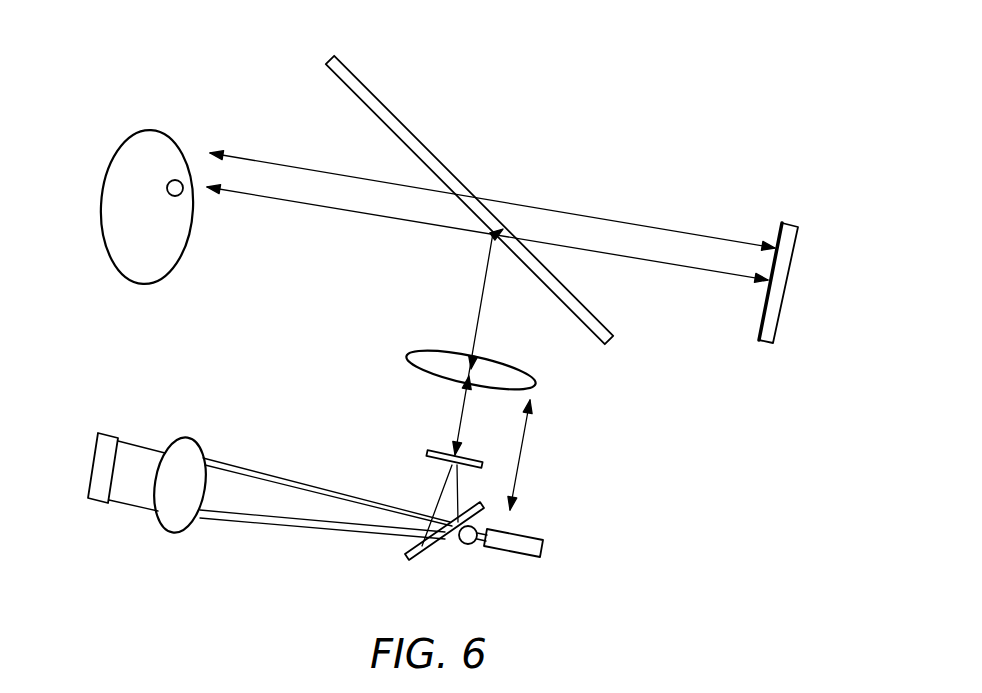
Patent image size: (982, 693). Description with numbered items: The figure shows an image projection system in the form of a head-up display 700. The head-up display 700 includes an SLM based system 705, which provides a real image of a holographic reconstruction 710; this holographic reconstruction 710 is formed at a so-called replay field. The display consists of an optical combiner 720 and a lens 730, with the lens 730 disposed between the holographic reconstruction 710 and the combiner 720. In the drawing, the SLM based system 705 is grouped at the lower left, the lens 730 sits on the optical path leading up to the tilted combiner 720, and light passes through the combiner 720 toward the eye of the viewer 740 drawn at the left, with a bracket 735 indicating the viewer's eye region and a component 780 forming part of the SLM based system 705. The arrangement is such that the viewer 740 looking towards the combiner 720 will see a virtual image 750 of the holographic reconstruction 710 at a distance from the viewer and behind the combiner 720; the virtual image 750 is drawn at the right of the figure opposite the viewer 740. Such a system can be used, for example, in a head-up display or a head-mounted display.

The head-up display 700 is at (600, 66).
The SLM based system 705 is at (537, 590).
The holographic reconstruction 710 is at (427, 455).
The optical combiner 720 is at (358, 78).
The lens 730 is at (403, 357).
The eye 735 is at (80, 130).
The viewer 740 is at (176, 266).
The virtual image 750 is at (781, 333).
The detector 780 is at (112, 432).